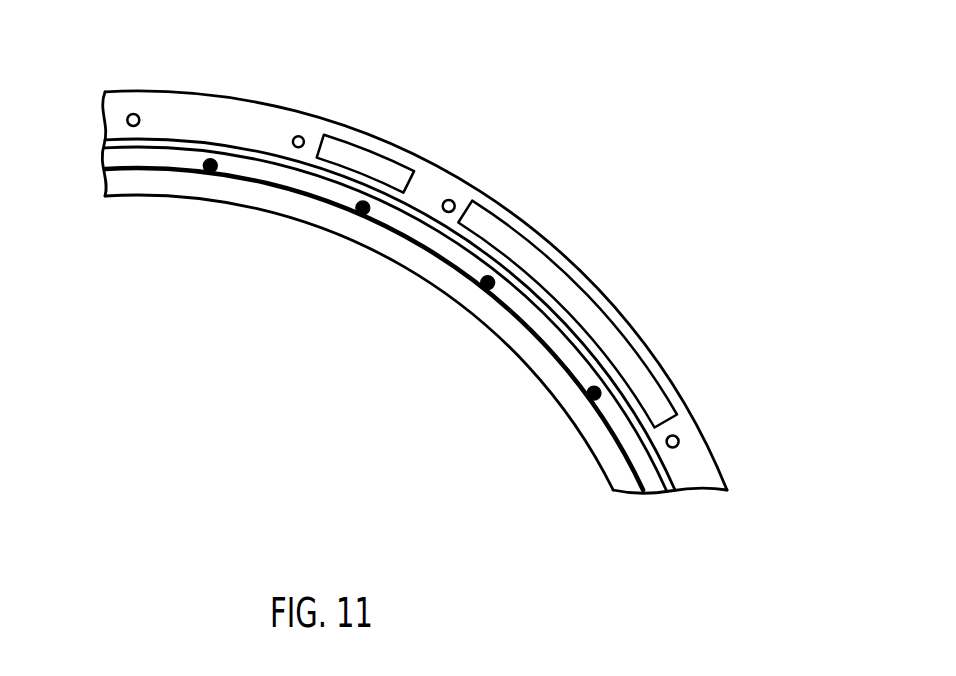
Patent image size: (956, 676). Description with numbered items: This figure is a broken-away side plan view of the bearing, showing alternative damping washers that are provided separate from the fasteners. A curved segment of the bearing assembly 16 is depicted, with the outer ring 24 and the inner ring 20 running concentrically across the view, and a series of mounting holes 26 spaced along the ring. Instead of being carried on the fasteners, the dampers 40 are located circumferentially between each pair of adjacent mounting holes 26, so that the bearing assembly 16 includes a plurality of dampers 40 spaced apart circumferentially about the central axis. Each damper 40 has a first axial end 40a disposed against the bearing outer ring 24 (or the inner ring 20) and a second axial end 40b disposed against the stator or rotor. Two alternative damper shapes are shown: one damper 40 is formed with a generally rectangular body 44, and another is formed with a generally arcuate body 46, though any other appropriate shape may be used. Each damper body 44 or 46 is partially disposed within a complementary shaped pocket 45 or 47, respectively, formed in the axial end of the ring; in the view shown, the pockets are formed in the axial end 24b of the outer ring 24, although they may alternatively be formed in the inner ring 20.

The bearing assembly 16 is at (463, 133).
The inner ring 20 is at (485, 365).
The outer ring 24 is at (653, 327).
The axial end 24b is at (697, 475).
The mounting holes 26 is at (303, 137).
The dampers 40 is at (368, 130).
The first axial end 40a is at (493, 323).
The second axial end 40b is at (540, 273).
The generally rectangular body 44 is at (377, 158).
The pocket 45 is at (344, 162).
The generally arcuate body 46 is at (585, 307).
The pocket 47 is at (587, 322).